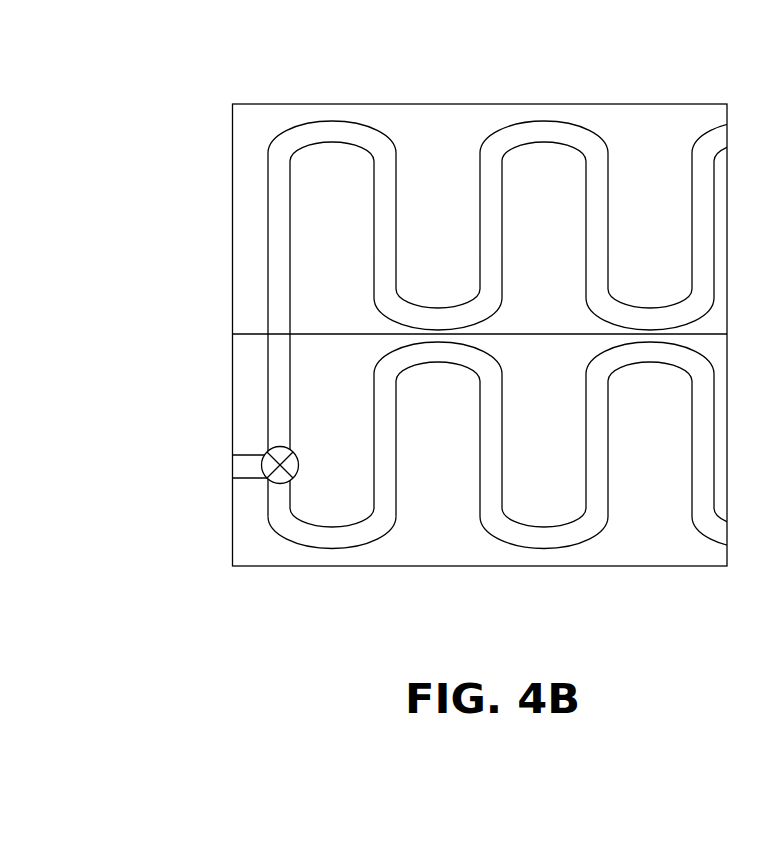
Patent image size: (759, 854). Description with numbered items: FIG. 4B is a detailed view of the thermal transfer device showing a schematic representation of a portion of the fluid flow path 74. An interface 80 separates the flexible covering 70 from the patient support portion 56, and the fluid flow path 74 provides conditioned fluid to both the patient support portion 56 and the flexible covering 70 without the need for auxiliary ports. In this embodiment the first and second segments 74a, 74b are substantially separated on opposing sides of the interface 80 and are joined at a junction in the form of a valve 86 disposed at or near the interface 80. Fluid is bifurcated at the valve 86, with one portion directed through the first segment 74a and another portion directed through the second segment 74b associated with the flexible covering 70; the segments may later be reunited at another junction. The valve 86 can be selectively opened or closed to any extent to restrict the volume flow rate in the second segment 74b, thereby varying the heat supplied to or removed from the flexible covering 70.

The patient support portion 56 is at (255, 414).
The flexible covering 70 is at (258, 217).
The fluid flow path 74 is at (513, 331).
The first segment 74a is at (350, 535).
The second segment 74b is at (348, 128).
The interface 80 is at (232, 334).
The valve 86 is at (268, 484).